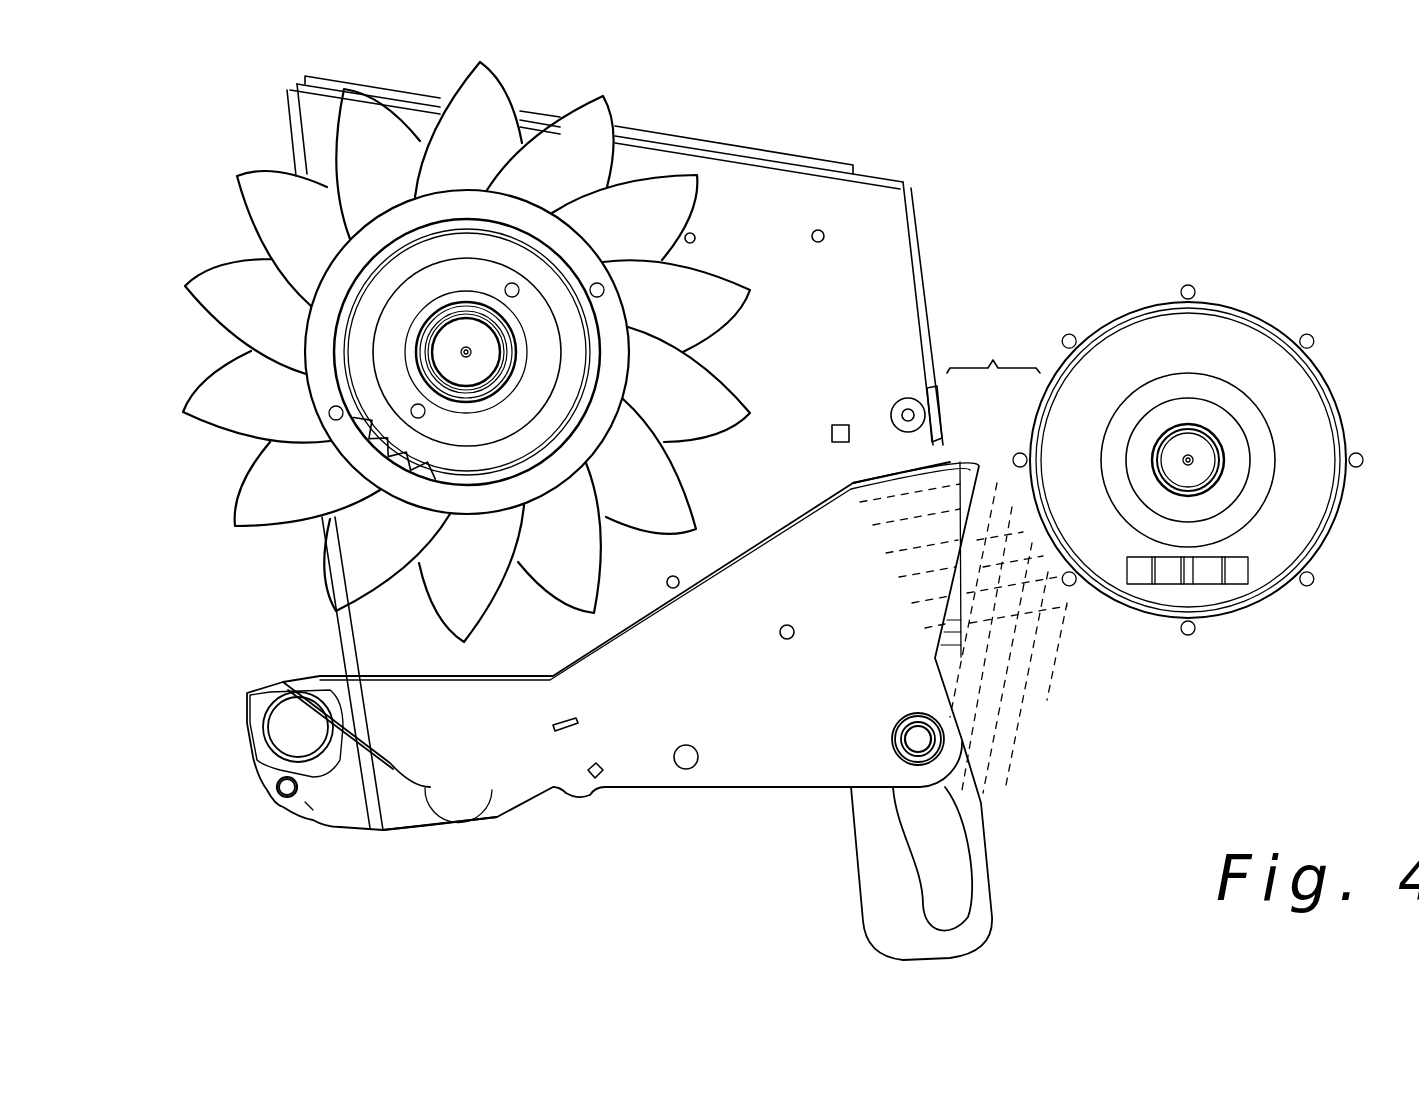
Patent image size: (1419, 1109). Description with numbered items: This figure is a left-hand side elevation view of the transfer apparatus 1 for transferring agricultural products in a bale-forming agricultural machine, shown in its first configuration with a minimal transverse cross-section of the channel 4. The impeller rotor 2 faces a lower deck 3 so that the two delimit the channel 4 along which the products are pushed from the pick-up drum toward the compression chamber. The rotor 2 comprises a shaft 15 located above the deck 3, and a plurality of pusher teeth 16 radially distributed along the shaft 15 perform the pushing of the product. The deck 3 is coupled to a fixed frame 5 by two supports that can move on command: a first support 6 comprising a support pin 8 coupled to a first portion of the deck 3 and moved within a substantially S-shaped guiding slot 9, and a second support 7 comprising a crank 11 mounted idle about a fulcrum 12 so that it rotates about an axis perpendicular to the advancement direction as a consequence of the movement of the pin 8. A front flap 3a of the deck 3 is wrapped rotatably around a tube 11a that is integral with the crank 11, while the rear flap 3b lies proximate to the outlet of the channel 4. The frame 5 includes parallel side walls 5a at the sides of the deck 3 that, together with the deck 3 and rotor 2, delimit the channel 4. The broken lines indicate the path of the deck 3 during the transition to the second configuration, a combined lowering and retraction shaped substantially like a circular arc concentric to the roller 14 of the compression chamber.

The transfer apparatus 1 is at (1006, 175).
The impeller rotor 2 is at (628, 166).
The deck 3 is at (686, 584).
The front flap 3a is at (282, 681).
The rear flap 3b is at (890, 473).
The channel 4 is at (390, 641).
The fixed frame 5 is at (832, 145).
The side walls 5a is at (858, 302).
The first support 6 is at (880, 766).
The second support 7 is at (257, 810).
The support pin 8 is at (892, 736).
The guiding slot 9 is at (935, 856).
The crank 11 is at (253, 760).
The tube 11a is at (250, 715).
The fulcrum 12 is at (288, 792).
The roller 14 is at (1283, 296).
The shaft 15 is at (385, 273).
The pusher teeth 16 is at (489, 121).